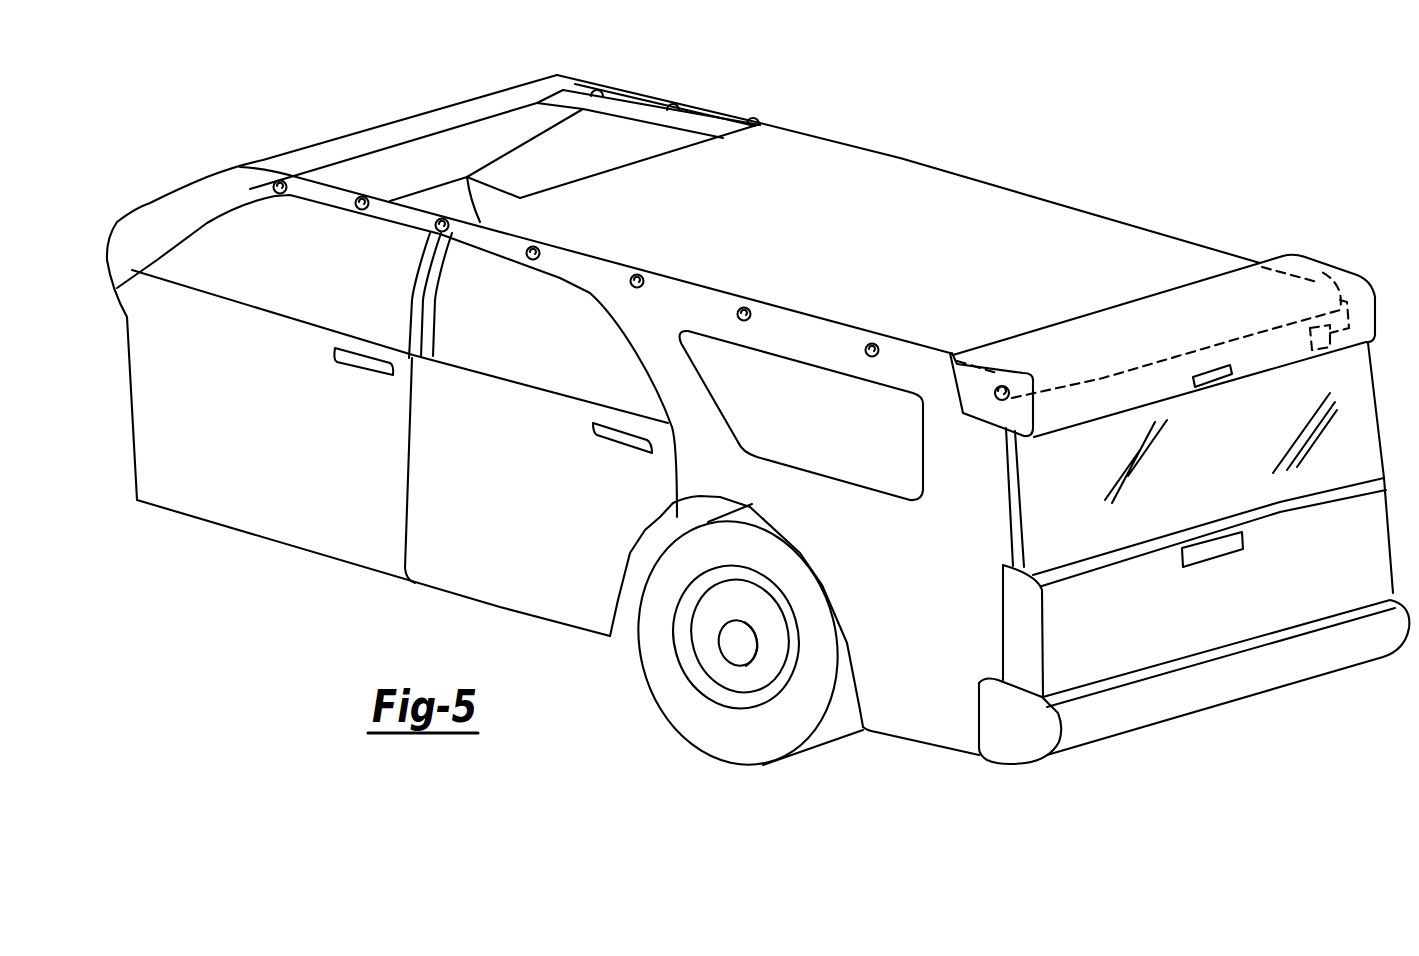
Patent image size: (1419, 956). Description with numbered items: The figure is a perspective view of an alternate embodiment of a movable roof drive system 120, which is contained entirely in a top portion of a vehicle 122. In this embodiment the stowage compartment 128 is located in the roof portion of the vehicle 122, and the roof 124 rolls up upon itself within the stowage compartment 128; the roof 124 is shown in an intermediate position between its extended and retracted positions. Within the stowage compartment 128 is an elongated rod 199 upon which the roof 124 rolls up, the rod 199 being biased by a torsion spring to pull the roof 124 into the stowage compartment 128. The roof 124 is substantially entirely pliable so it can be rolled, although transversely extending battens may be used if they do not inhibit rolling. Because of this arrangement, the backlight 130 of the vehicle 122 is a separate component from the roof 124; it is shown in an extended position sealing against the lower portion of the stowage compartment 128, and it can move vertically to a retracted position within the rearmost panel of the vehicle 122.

The drive system 120 is at (960, 143).
The vehicle 122 is at (307, 525).
The roof 124 is at (800, 157).
The stowage compartment 128 is at (1315, 290).
The backlight 130 is at (1256, 442).
The elongated rod 199 is at (994, 400).